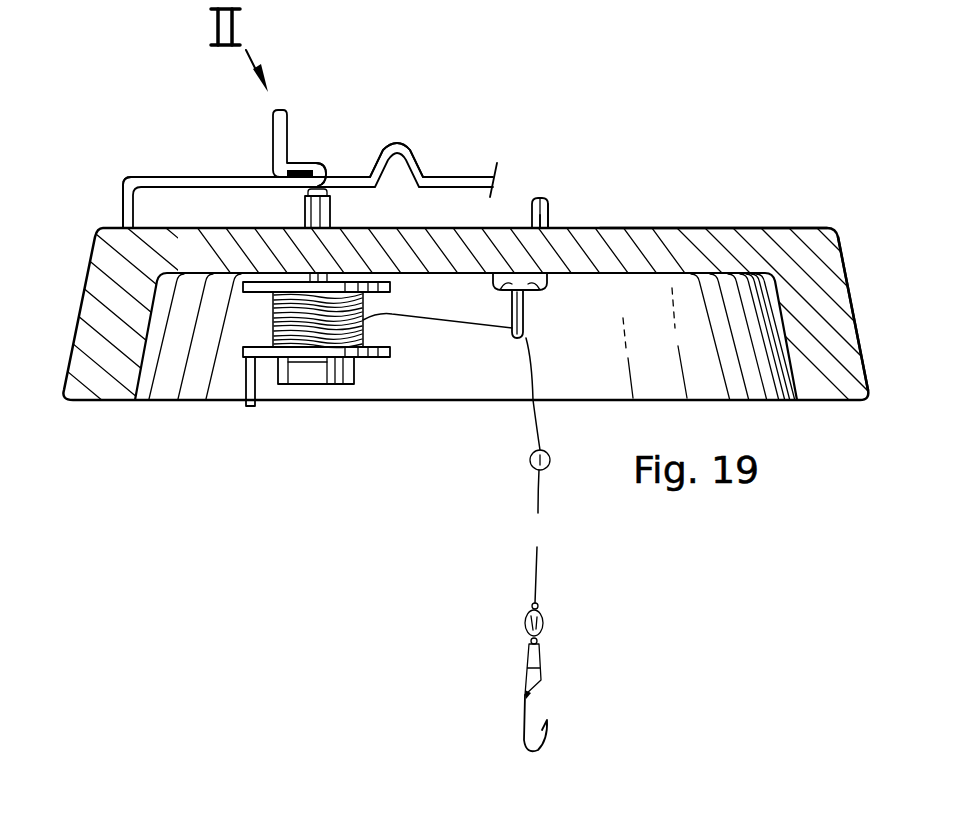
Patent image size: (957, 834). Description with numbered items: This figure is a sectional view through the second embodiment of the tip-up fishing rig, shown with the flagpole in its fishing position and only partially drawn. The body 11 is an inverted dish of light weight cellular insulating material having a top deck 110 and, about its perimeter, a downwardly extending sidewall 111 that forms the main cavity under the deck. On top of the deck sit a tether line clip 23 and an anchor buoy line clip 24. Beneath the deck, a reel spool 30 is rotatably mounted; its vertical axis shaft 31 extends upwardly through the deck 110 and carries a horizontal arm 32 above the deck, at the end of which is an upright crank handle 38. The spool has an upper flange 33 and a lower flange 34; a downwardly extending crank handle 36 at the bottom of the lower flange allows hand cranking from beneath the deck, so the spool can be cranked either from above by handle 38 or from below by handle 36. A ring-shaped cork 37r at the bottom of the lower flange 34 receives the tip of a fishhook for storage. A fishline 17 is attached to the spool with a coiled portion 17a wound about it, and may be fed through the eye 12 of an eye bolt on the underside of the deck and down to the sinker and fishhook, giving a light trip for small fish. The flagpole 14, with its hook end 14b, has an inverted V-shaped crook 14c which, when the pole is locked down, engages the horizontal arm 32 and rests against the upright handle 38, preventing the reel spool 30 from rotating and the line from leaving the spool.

The body 11 is at (733, 193).
The top deck 110 is at (680, 228).
The sidewall 111 is at (830, 265).
The eye 12 is at (525, 318).
The flagpole 14 is at (469, 180).
The hook end 14b is at (126, 200).
The inverted V-shaped crook 14c is at (411, 165).
The fishline 17 is at (535, 419).
The coiled portion of fishline 17a is at (272, 322).
The tether line clip 23 is at (552, 214).
The anchor buoy line clip 24 is at (532, 200).
The reel spool 30 is at (299, 382).
The vertical axis shaft 31 is at (320, 270).
The horizontal arm 32 is at (310, 165).
The upper flange 33 is at (392, 287).
The lower flange 34 is at (392, 353).
The crank handle 36 is at (253, 395).
The ring-shaped cork 37r is at (340, 384).
The upright crank handle 38 is at (272, 132).